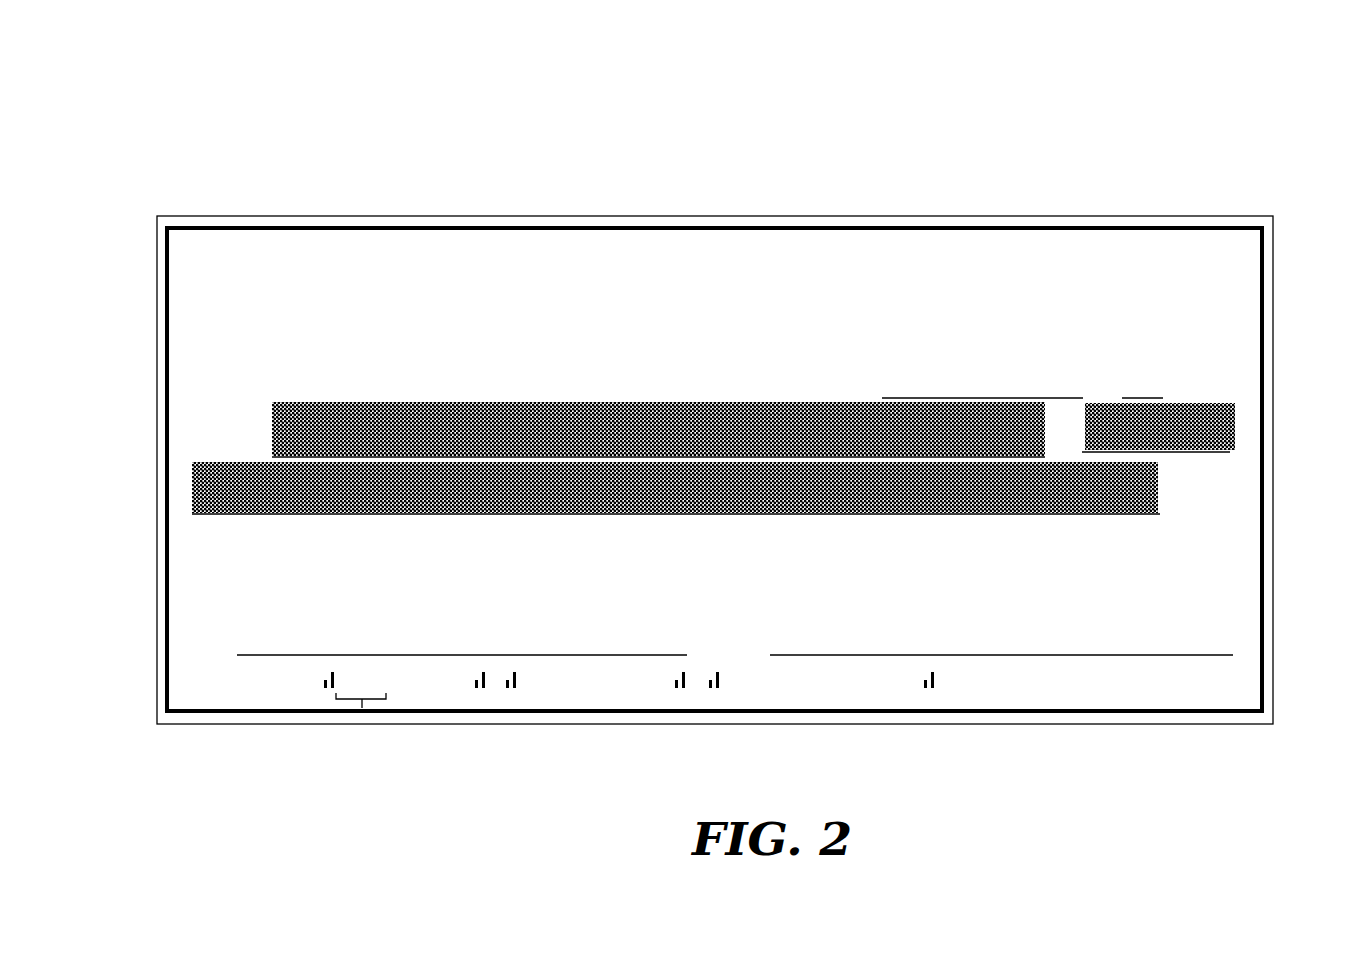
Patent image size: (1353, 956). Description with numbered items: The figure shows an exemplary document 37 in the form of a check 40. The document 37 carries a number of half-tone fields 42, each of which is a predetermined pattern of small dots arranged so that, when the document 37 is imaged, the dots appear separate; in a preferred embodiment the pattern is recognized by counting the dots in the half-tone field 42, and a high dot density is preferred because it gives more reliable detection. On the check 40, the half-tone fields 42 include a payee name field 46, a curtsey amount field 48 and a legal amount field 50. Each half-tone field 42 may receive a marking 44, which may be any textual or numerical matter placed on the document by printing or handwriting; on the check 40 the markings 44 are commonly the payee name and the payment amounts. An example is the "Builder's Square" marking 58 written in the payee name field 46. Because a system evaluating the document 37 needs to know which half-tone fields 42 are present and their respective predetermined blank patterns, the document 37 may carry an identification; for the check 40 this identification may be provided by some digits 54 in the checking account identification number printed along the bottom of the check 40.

The document 37 is at (999, 156).
The check 40 is at (1040, 258).
The half-tone field 42 is at (786, 412).
The marking 44 is at (338, 412).
The payee name field 46 is at (543, 412).
The curtsey amount field 48 is at (1185, 410).
The legal amount field 50 is at (1030, 492).
The digits 54 is at (362, 708).
The "Builder's Square" marking 58 is at (440, 412).